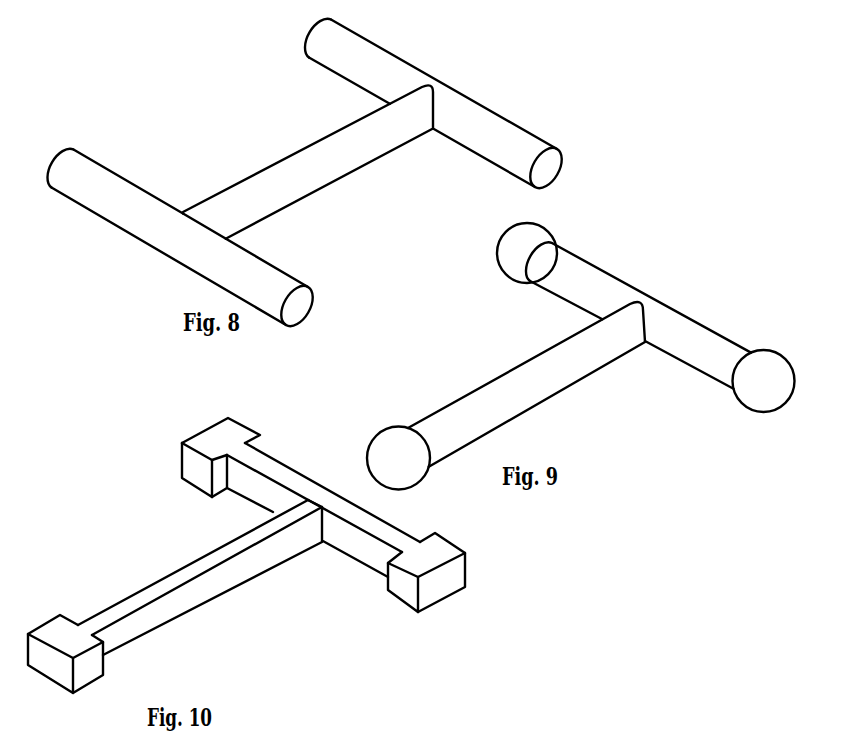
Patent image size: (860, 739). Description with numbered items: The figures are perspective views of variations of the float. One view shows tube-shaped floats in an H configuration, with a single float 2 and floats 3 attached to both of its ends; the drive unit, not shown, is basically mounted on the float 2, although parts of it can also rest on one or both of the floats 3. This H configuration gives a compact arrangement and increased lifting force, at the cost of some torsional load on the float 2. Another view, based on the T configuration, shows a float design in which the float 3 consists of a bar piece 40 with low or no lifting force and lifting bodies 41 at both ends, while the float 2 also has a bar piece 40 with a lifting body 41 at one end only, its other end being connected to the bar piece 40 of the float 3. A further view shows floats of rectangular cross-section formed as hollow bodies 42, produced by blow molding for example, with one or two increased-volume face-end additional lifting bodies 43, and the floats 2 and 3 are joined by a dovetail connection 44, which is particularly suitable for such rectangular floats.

In FIG. 8, the float 2 is at (320, 177).
In FIG. 9, the float 2 is at (537, 407).
In FIG. 10, the float 2 is at (228, 593).
In FIG. 8, the float 3 is at (482, 145).
In FIG. 9, the float 3 is at (614, 274).
In FIG. 10, the float 3 is at (382, 528).
In FIG. 9, the bar piece 40 is at (579, 354).
In FIG. 9, the lifting body 41 is at (750, 388).
In FIG. 10, the hollow body 42 is at (331, 496).
In FIG. 10, the additional lifting body 43 is at (207, 445).
In FIG. 10, the dovetail connection 44 is at (330, 505).